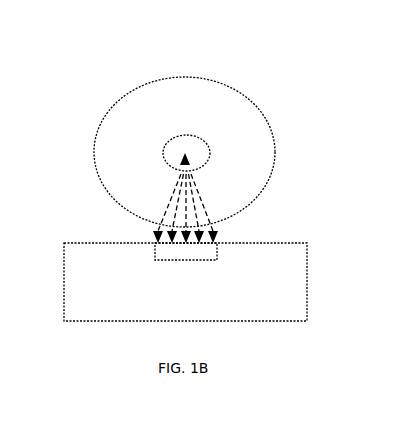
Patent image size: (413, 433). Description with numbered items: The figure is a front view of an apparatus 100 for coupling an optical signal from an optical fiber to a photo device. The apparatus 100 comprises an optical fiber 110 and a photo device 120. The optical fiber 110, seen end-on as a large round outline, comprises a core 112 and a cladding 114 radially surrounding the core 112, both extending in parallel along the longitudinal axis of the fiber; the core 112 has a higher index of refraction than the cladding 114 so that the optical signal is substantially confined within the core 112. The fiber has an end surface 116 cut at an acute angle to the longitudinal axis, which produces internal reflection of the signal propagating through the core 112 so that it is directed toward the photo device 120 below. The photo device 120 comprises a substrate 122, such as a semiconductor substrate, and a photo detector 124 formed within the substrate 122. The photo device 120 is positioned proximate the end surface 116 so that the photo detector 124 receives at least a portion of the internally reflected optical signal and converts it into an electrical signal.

The apparatus 100 is at (286, 70).
The optical fiber 110 is at (127, 90).
The core 112 is at (193, 152).
The cladding 114 is at (112, 163).
The end surface 116 is at (186, 110).
The photo device 120 is at (299, 241).
The substrate 122 is at (283, 282).
The photo detector 124 is at (187, 260).